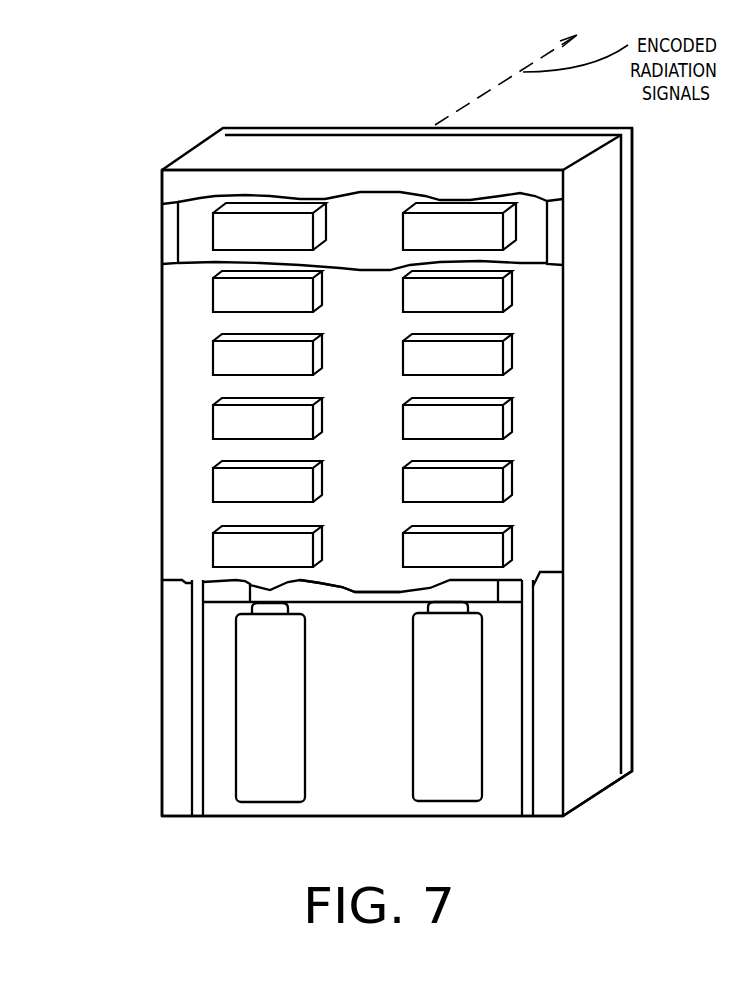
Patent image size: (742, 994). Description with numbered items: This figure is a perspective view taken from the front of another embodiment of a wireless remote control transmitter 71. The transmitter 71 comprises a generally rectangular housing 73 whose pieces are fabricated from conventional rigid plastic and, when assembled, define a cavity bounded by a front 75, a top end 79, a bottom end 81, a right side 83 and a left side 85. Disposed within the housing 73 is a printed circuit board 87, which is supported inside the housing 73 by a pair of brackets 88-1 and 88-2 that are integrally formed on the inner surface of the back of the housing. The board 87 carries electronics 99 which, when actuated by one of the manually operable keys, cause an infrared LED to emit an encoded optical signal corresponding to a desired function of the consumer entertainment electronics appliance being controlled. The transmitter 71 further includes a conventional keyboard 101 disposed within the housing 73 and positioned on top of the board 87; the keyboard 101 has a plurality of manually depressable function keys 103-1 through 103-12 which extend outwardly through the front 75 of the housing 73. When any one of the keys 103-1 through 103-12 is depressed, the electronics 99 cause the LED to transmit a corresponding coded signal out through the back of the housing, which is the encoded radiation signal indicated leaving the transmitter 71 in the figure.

The wireless remote control transmitter 71 is at (306, 848).
The housing 73 is at (646, 349).
The front 75 is at (537, 393).
The top end 79 is at (370, 152).
The bottom end 81 is at (473, 816).
The right side 83 is at (603, 703).
The left side 85 is at (158, 717).
The printed circuit board 87 is at (233, 593).
The bracket 88-1 is at (528, 643).
The bracket 88-2 is at (190, 657).
The electronics 99 is at (320, 592).
The keyboard 101 is at (193, 233).
The function key 103-1 is at (485, 230).
The function key 103-12 is at (478, 543).